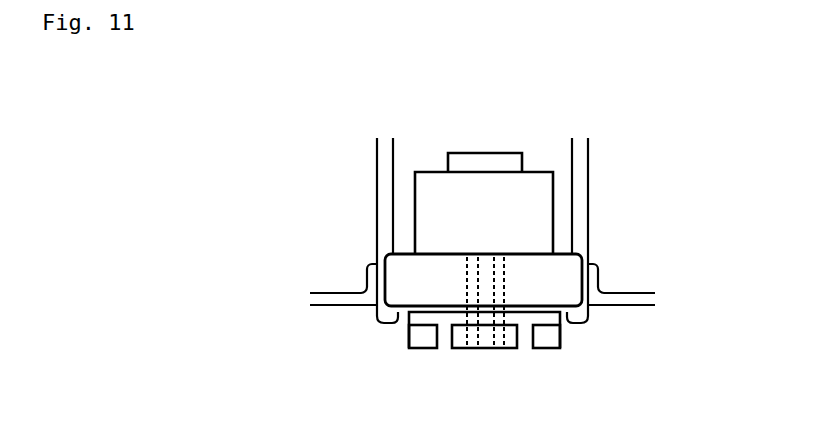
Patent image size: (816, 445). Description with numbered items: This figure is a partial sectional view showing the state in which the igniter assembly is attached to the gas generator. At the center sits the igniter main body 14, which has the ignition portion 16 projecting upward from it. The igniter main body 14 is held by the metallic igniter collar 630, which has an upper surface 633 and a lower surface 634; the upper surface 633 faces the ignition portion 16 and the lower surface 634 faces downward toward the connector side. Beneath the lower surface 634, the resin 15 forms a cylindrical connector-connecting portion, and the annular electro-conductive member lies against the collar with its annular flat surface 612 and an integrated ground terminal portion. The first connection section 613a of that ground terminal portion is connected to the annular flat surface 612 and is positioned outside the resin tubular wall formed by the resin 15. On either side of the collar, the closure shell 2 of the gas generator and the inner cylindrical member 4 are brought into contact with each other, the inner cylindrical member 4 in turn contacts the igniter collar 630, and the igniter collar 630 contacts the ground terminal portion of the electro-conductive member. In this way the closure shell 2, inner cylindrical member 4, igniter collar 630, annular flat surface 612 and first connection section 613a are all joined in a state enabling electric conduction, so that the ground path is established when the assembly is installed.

The closure shell 2 is at (327, 303).
The inner cylindrical member 4 is at (588, 173).
The igniter main body 14 is at (476, 158).
The resin 15 is at (432, 178).
The ignition portion 16 is at (492, 257).
The igniter collar 630 is at (394, 266).
The annular flat surface 612 is at (515, 318).
The first connection section 613a is at (441, 348).
The upper surface 633 is at (559, 255).
The lower surface 634 is at (543, 302).